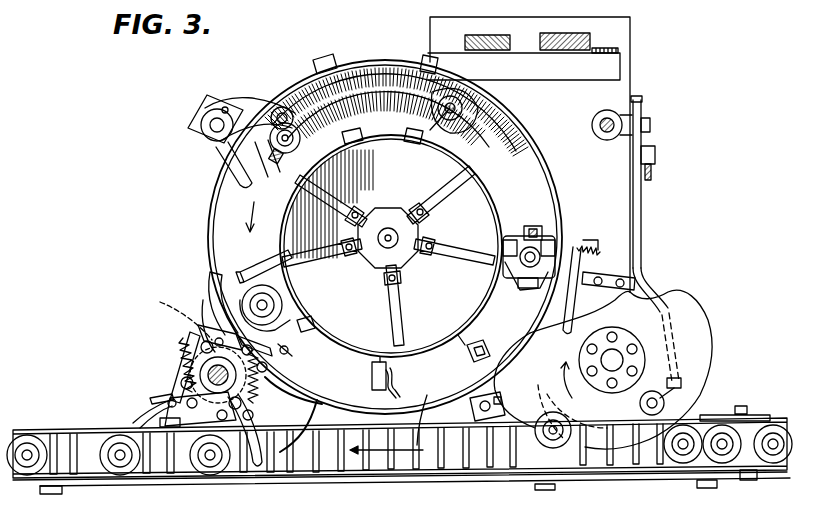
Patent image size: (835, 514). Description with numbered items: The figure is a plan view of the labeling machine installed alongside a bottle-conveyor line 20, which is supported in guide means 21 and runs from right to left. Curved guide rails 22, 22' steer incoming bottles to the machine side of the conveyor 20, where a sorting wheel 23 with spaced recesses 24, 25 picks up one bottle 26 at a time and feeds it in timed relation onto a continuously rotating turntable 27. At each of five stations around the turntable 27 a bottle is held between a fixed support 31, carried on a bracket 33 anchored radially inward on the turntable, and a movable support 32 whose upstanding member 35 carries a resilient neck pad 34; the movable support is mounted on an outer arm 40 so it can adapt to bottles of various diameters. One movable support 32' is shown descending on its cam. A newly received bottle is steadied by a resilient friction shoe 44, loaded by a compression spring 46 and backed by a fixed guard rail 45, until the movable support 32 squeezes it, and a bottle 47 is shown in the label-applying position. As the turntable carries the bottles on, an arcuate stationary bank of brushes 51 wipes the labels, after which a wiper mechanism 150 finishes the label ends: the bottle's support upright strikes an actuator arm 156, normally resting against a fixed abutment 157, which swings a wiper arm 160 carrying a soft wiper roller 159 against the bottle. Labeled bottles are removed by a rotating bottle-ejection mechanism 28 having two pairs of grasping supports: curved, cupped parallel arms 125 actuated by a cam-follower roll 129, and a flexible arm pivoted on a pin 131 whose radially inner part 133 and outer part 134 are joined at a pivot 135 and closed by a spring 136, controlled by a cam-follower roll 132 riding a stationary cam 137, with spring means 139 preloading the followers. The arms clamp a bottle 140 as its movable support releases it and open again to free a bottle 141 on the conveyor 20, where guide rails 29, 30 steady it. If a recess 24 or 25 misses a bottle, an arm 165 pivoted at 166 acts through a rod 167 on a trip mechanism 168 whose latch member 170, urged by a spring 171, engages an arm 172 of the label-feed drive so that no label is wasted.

The bottle-conveyor line 20 is at (350, 470).
The guide means 21 is at (427, 476).
The curved guide rail 22 is at (728, 466).
The curved guide rail 22' is at (735, 409).
The sorting wheel 23 is at (700, 350).
The sorting recess 24 is at (545, 412).
The sorting recess 25 is at (668, 302).
The bottle 26 is at (518, 412).
The turntable 27 is at (419, 420).
The bottle-ejection mechanism 28 is at (196, 333).
The guide rail 29 is at (165, 478).
The guide rail 30 is at (212, 418).
The fixed support 31 is at (400, 386).
The movable support 32 is at (508, 331).
The movable support 32' is at (529, 237).
The bracket 33 is at (372, 370).
The neck pad 34 is at (474, 360).
The upstanding member 35 is at (468, 350).
The arm 40 is at (315, 328).
The resilient friction shoe 44 is at (578, 250).
The fixed guard rail 45 is at (496, 304).
The compression spring 46 is at (596, 250).
The bottle 47 is at (504, 256).
The upper bank of brushes 51 is at (398, 135).
The parallel arms 125 is at (295, 420).
The cam-follower roll 129 is at (190, 333).
The pin 131 is at (256, 390).
The cam-follower roll 132 is at (268, 367).
The radially inner support part 133 is at (156, 396).
The radially outer support part 134 is at (128, 416).
The pivot 135 is at (255, 338).
The spring 136 is at (290, 350).
The stationary cam 137 is at (171, 314).
The spring means 139 is at (282, 372).
The bottle 140 is at (290, 300).
The bottle 141 is at (258, 465).
The wiper mechanism 150 is at (220, 150).
The actuator arm 156 is at (257, 180).
The fixed abutment 157 is at (190, 137).
The wiper roller 159 is at (271, 117).
The wiper arm 160 is at (252, 88).
The arm 165 is at (598, 395).
The pivot 166 is at (650, 416).
The rod 167 is at (645, 240).
The trip mechanism 168 is at (661, 159).
The latch member 170 is at (642, 108).
The spring 171 is at (641, 98).
The arm 172 is at (650, 125).